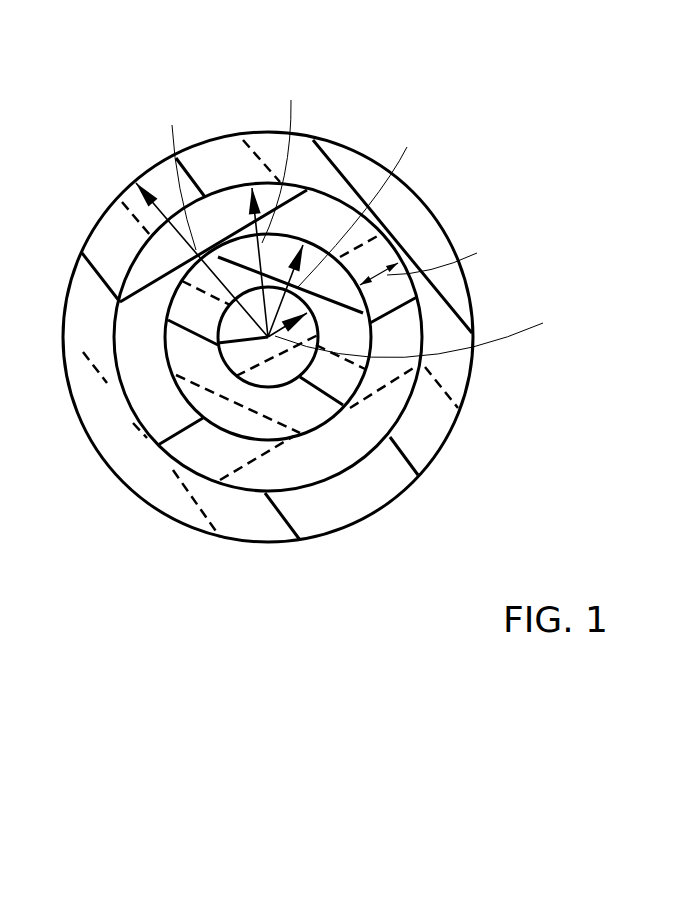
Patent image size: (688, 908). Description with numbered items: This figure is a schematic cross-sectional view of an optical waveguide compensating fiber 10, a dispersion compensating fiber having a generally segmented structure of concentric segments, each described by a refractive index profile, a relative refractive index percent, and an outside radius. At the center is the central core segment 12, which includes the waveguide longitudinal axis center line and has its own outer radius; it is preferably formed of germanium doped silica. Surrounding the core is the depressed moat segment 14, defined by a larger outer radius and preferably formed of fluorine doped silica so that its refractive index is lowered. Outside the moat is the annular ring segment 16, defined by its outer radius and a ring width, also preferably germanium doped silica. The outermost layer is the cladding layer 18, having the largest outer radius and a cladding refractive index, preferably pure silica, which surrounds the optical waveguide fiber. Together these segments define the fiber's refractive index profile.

The optical waveguide compensating fiber 10 is at (550, 42).
The central core segment 12 is at (262, 365).
The depressed moat segment 14 is at (240, 403).
The annular ring segment 16 is at (250, 465).
The cladding layer 18 is at (303, 515).